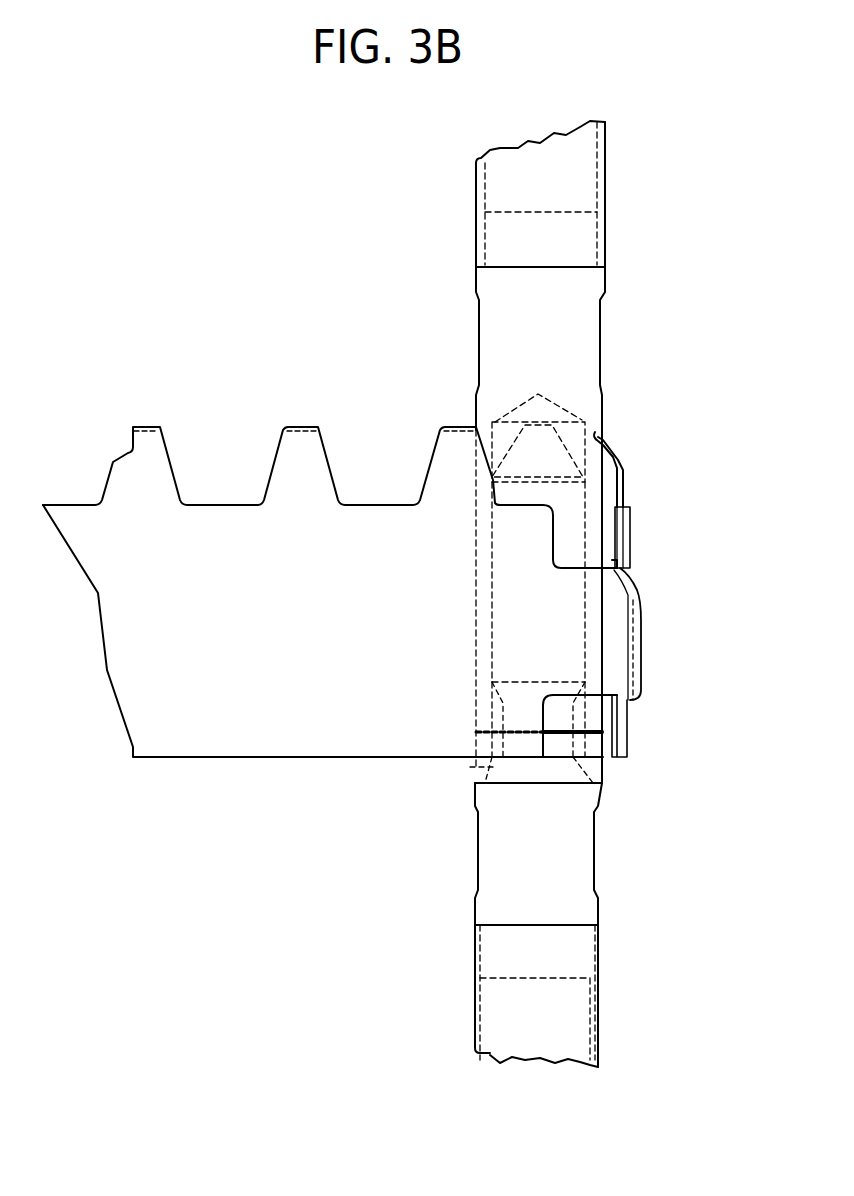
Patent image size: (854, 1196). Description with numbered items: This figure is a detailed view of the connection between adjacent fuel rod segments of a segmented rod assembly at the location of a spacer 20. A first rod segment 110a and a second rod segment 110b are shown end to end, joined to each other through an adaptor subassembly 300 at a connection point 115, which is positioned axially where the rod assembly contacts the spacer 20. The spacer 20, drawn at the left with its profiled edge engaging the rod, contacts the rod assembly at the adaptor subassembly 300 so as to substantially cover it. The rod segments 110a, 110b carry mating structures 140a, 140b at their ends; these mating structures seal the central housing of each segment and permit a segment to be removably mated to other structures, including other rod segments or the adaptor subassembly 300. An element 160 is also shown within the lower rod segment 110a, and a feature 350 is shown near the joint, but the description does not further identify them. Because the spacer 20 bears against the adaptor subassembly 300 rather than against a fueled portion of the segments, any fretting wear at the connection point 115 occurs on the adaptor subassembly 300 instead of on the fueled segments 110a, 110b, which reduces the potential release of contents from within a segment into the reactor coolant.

The spacer 20 is at (251, 646).
The rod segment 110a is at (475, 977).
The rod segment 110b is at (607, 145).
The connection point 115 is at (462, 786).
The first mating structure 140a is at (573, 463).
The second mating structure 140b is at (583, 417).
The connector 160 is at (535, 1019).
The adaptor subassembly 300 is at (710, 972).
The opening 350 is at (592, 402).